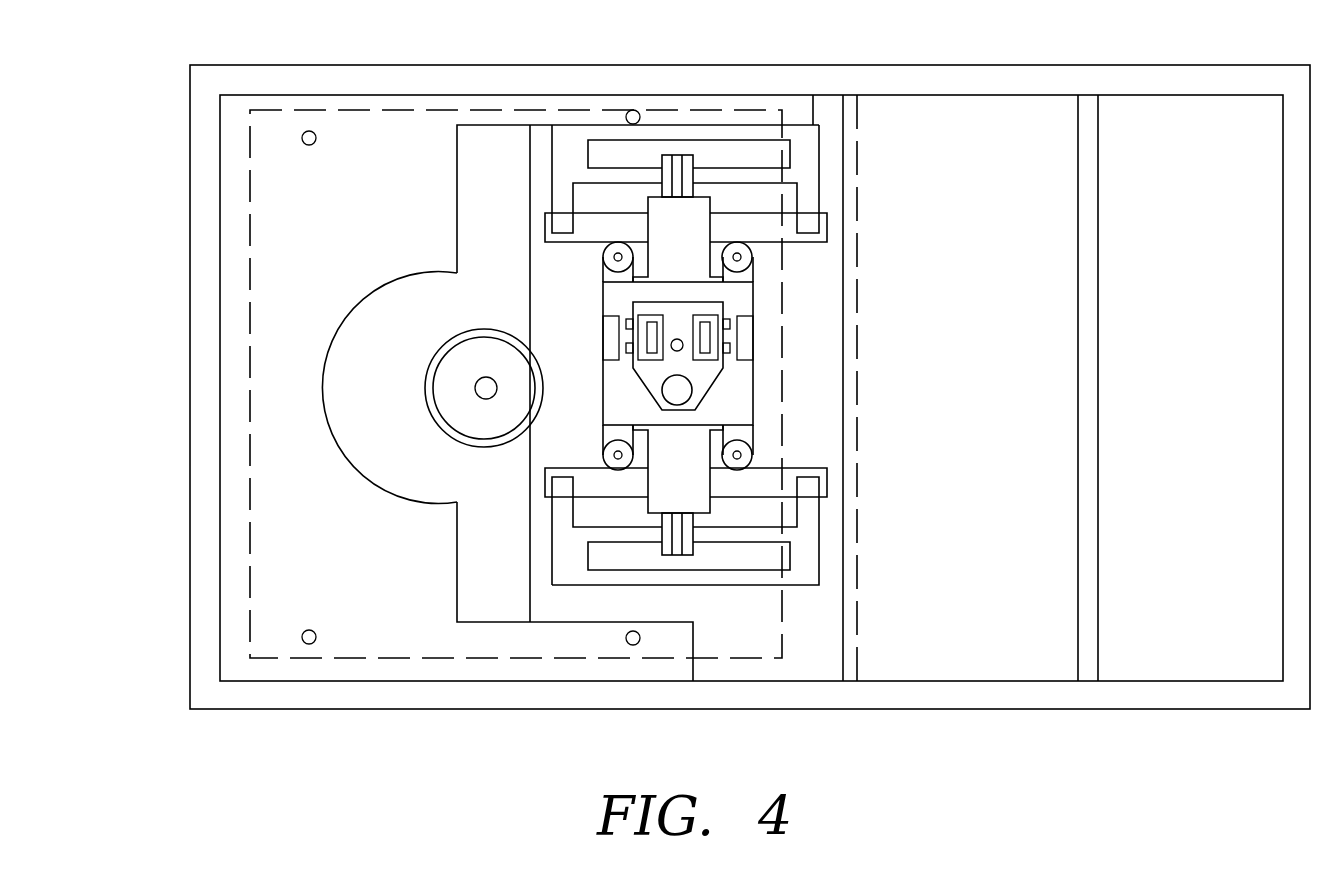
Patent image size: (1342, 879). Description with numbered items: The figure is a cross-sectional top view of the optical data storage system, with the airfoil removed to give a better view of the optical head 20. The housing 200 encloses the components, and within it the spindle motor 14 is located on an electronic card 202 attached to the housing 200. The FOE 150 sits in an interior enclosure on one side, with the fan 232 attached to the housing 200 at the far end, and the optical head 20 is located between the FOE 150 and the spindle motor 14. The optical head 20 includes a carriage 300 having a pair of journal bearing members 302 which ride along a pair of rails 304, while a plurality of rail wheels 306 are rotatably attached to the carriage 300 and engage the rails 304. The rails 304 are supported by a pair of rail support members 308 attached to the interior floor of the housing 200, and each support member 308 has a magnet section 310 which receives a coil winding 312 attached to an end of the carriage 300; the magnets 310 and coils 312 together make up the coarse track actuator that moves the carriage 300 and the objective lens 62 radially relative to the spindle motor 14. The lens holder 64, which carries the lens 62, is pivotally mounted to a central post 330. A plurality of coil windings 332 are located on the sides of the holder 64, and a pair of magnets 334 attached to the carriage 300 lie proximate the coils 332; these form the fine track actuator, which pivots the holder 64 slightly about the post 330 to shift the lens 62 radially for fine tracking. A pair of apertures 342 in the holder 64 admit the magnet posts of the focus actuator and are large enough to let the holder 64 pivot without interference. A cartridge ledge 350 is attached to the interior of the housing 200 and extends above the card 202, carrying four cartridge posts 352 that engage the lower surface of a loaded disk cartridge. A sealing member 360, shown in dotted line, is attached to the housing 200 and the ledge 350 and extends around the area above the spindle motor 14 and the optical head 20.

The housing 200 is at (190, 190).
The sealing member 360 is at (252, 430).
The cartridge ledge 350 is at (335, 210).
The cartridge posts 352 is at (310, 131).
The electronic card 202 is at (445, 471).
The spindle motor 14 is at (488, 328).
The rail support members 308 is at (813, 142).
The rails 304 is at (827, 227).
The magnet section 310 is at (731, 172).
The coil winding 312 is at (684, 150).
The journal bearing members 302 is at (692, 253).
The rail wheels 306 is at (752, 262).
The optical head 20 is at (603, 292).
The lens holder 64 is at (712, 306).
The coil windings 332 is at (628, 331).
The magnets 334 is at (606, 346).
The central post 330 is at (679, 351).
The apertures 342 is at (653, 362).
The objective lens 62 is at (688, 396).
The carriage 300 is at (622, 410).
The FOE 150 is at (990, 423).
The fan 232 is at (1220, 423).